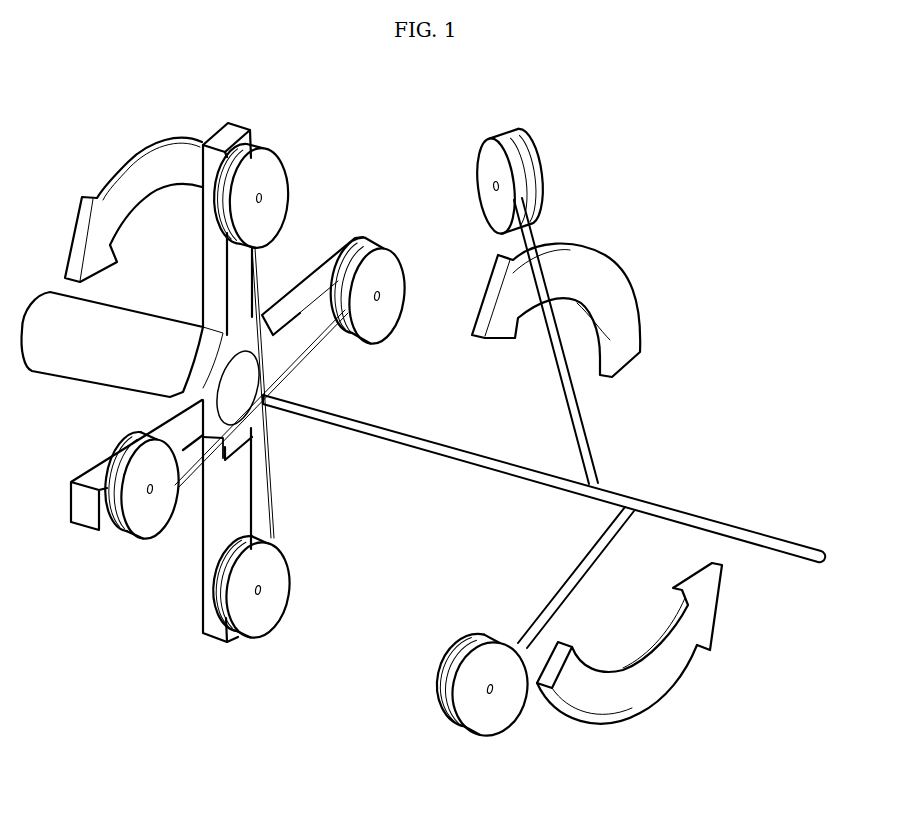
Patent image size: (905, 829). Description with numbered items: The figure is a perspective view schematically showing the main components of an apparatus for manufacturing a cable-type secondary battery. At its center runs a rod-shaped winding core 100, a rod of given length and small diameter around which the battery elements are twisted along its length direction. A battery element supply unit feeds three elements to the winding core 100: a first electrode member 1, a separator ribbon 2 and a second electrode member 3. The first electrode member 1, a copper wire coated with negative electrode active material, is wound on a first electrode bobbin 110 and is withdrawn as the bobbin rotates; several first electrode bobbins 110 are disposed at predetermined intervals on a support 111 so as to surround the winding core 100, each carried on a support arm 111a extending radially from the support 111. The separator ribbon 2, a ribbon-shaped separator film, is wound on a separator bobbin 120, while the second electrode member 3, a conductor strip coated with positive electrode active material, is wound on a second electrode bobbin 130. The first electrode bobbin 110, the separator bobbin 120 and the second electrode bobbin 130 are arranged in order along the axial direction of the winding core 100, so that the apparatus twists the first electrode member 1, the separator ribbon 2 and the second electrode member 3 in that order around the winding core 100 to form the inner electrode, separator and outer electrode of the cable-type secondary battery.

The first electrode member 1 is at (285, 360).
The separator ribbon 2 is at (590, 422).
The second electrode member 3 is at (570, 578).
The winding core 100 is at (739, 514).
The first electrode bobbin 110 is at (277, 136).
The support 111 is at (291, 276).
The support arm 111a is at (245, 265).
The separator bobbin 120 is at (530, 125).
The second electrode bobbin 130 is at (450, 640).